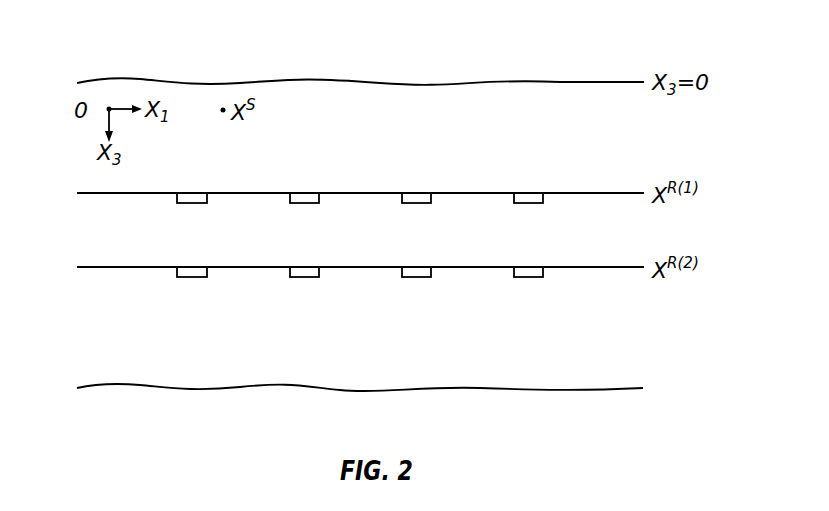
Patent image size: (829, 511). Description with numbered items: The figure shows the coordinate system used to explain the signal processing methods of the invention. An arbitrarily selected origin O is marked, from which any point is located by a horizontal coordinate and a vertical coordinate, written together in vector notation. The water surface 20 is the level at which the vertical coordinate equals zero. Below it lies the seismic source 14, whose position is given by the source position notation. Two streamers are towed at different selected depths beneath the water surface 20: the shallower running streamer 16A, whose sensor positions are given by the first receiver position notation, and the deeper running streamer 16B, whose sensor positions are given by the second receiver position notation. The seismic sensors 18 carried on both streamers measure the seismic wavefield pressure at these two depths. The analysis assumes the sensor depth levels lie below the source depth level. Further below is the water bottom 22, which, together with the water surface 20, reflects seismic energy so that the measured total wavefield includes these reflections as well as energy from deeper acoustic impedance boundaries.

The water surface 20 is at (118, 78).
The seismic source 14 is at (223, 113).
The shallower running streamer 16A is at (102, 192).
The deeper running streamer 16B is at (102, 266).
The seismic sensors 18 is at (343, 251).
The water bottom 22 is at (118, 383).